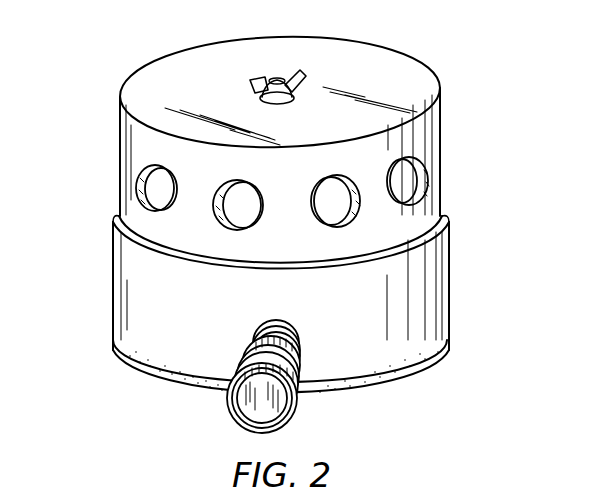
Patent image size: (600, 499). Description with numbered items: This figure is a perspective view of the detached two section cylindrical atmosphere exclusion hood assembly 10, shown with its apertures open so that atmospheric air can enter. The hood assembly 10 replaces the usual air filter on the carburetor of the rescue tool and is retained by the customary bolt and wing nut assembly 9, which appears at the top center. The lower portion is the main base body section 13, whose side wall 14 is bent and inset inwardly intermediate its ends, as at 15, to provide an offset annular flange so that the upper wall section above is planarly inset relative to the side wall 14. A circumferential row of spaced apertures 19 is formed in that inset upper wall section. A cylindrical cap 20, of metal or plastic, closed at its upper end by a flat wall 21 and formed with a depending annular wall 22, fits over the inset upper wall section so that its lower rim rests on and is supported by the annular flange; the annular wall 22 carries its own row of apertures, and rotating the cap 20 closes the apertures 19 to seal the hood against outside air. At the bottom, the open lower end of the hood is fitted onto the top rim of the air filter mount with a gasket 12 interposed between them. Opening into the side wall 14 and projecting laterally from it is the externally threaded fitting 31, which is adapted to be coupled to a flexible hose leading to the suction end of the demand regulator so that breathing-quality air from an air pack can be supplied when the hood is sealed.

The bolt and wing nut assembly 9 is at (277, 80).
The hood assembly 10 is at (465, 178).
The gasket 12 is at (440, 353).
The main base body section 13 is at (114, 278).
The side wall 14 is at (116, 320).
The inset bend 15 is at (125, 235).
The apertures 19 is at (212, 216).
The cylindrical cap 20 is at (125, 142).
The flat wall 21 is at (398, 62).
The annular wall 22 is at (438, 132).
The threaded fitting 31 is at (299, 352).